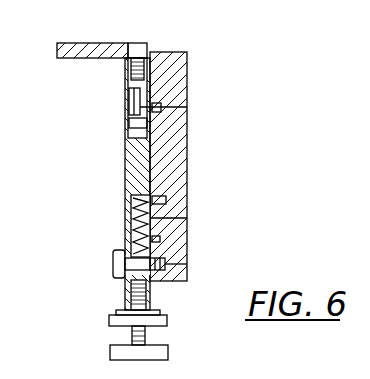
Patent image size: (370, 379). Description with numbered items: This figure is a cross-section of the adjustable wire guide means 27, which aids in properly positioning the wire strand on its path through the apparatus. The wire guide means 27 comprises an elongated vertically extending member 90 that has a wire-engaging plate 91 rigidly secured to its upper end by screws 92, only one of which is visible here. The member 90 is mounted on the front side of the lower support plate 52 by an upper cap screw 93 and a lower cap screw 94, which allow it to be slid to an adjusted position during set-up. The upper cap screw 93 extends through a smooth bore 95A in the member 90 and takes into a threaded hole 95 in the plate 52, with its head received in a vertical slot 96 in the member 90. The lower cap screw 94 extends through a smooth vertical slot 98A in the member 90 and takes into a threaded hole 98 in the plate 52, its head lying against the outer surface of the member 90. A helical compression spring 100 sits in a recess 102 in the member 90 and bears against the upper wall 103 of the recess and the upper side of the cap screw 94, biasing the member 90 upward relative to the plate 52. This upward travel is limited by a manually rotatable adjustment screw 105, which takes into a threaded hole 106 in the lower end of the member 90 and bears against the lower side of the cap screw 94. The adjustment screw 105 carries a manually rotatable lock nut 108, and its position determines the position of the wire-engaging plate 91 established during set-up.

The adjustable wire guide means 27 is at (92, 147).
The lower support plate 52 is at (187, 130).
The elongated vertically extending member 90 is at (125, 165).
The wire-engaging plate 91 is at (70, 43).
The screws 92 is at (138, 43).
The upper cap screw 93 is at (129, 105).
The lower cap screw 94 is at (113, 265).
The threaded hole 95 is at (187, 107).
The smooth bore 95A is at (187, 92).
The vertical slot 96 is at (128, 126).
The threaded hole 98 is at (187, 262).
The smooth vertical slot 98A is at (187, 240).
The helical compression spring 100 is at (187, 220).
The recess 102 is at (187, 205).
The upper wall of the recess 103 is at (135, 210).
The adjustment screw 105 is at (132, 330).
The threaded hole 106 is at (130, 293).
The lock nut 108 is at (168, 322).